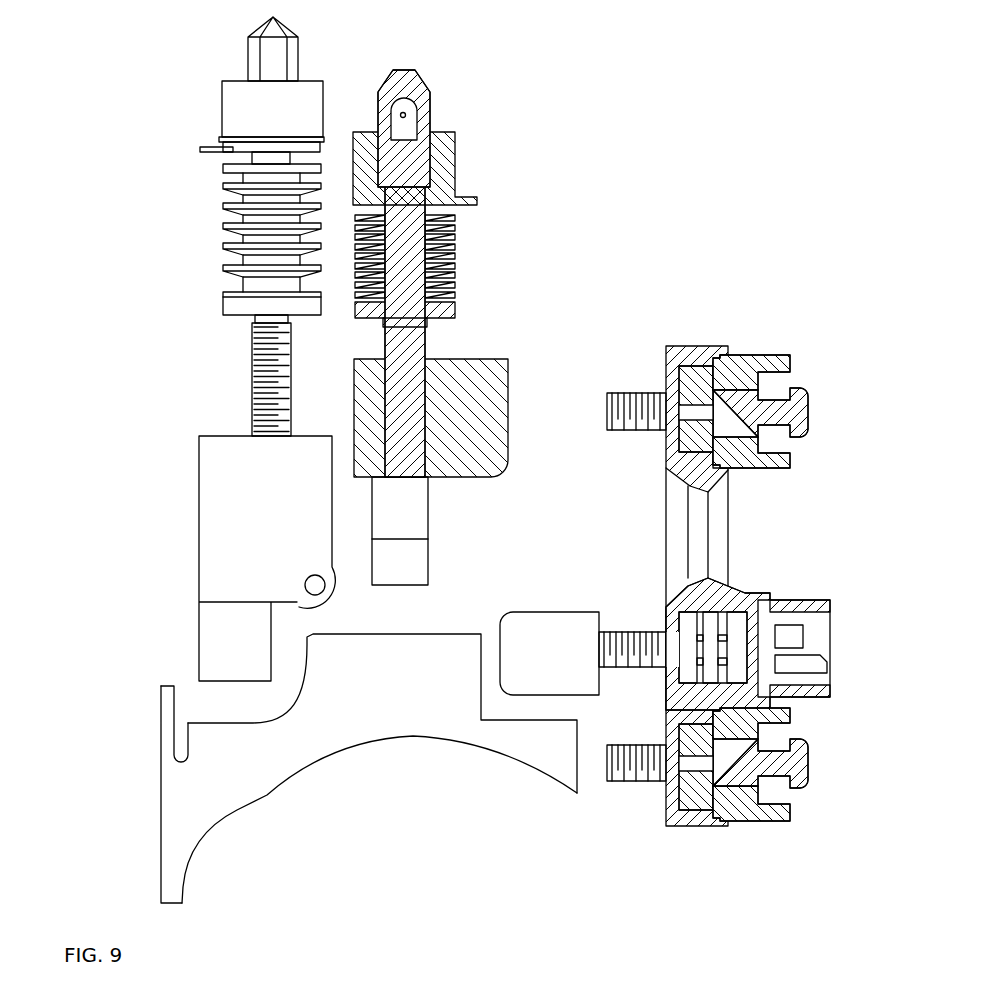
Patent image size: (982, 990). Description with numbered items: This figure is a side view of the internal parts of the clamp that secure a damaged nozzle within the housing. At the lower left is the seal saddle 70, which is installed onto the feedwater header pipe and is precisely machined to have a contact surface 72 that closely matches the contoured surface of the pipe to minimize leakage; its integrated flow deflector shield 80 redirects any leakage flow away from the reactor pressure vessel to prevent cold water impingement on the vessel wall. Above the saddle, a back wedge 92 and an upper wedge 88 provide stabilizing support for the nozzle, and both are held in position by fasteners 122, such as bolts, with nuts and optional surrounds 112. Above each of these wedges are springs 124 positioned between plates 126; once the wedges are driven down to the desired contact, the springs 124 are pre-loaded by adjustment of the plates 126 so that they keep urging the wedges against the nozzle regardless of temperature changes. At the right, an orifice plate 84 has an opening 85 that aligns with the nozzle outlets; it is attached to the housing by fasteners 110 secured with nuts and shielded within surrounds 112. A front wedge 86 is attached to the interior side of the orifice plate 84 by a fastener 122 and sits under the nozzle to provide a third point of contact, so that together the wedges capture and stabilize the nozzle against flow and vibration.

The seal saddle 70 is at (160, 838).
The contact surface 72 is at (238, 810).
The flow deflector shield 80 is at (160, 702).
The orifice plate 84 is at (700, 347).
The opening 85 is at (730, 558).
The front wedge 86 is at (550, 667).
The upper wedge 88 is at (508, 442).
The back wedge 92 is at (240, 553).
The fastener 110 is at (632, 402).
The surround 112 is at (242, 102).
The fastener 122 is at (253, 372).
The spring 124 is at (223, 190).
The plate 126 is at (223, 167).